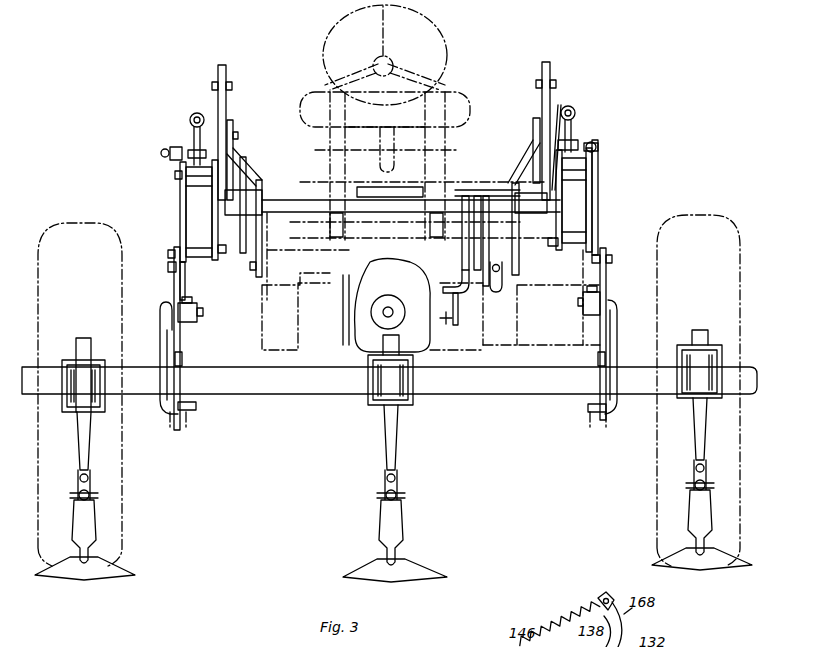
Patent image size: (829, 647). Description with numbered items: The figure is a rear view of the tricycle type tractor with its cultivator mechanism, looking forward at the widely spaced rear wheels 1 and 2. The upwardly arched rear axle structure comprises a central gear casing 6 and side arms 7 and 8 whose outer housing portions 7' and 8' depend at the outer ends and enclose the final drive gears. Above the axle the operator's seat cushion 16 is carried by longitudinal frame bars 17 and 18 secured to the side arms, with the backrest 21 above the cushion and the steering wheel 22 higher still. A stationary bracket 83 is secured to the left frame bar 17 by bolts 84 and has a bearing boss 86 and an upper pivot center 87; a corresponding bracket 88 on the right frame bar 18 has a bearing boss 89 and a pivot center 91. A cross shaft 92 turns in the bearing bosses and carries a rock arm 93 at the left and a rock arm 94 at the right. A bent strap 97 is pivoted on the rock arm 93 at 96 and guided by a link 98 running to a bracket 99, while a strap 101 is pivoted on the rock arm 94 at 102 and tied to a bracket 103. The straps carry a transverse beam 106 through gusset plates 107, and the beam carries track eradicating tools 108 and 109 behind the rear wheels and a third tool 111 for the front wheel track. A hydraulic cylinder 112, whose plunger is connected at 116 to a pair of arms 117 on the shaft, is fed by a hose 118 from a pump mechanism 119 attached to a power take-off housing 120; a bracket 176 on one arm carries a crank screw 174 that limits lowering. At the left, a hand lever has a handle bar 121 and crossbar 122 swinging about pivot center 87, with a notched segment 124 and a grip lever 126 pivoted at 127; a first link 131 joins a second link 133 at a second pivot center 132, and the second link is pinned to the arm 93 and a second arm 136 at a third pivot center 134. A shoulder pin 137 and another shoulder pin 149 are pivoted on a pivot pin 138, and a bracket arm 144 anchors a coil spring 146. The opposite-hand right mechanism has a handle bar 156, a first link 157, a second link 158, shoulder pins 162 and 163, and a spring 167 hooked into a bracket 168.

The rear wheel 1 is at (125, 515).
The rear wheel 2 is at (657, 515).
The central gear casing 6 is at (360, 275).
The side arm 7 is at (296, 317).
The outer housing portion 7' is at (199, 413).
The side arm 8 is at (515, 351).
The outer housing portion 8' is at (578, 413).
The seat cushion 16 is at (468, 192).
The longitudinal frame bar 17 is at (290, 273).
The longitudinal frame bar 18 is at (517, 284).
The backrest 21 is at (450, 98).
The steering wheel 22 is at (438, 40).
The stationary bracket 83 is at (248, 168).
The bolts 84 is at (256, 266).
The bearing boss 86 is at (240, 214).
The pivot center 87 is at (238, 136).
The stationary bracket 88 is at (536, 158).
The bearing boss 89 is at (540, 203).
The pivot center 91 is at (533, 130).
The cross shaft 92 is at (303, 204).
The rock arm 93 is at (180, 232).
The rock arm 94 is at (600, 224).
The pivot 96 is at (170, 266).
The bent strap 97 is at (173, 281).
The link 98 is at (160, 342).
The bracket 99 is at (197, 320).
The strap 101 is at (607, 288).
The pivot 102 is at (607, 260).
The bracket 103 is at (586, 314).
The transverse beam 106 is at (486, 382).
The gusset plates 107 is at (180, 359).
The track eradicating tool 108 is at (114, 572).
The track eradicating tool 109 is at (715, 560).
The track eradicating tool 111 is at (423, 566).
The hydraulic cylinder 112 is at (465, 280).
The pivotal connection 116 is at (462, 262).
The arms 117 is at (462, 246).
The hose 118 is at (458, 312).
The pump mechanism 119 is at (446, 318).
The power take-off housing 120 is at (355, 330).
The handle bar 121 is at (228, 80).
The crossbar 122 is at (236, 153).
The notched segment 124 is at (259, 185).
The grip lever 126 is at (217, 84).
The pivot 127 is at (234, 88).
The first link 131 is at (192, 196).
The second pivot center 132 is at (175, 176).
The second link 133 is at (180, 202).
The third pivot center 134 is at (174, 252).
The second arm 136 is at (226, 249).
The shoulder pin 137 is at (172, 150).
The pivot pin 138 is at (166, 157).
The bracket arm 144 is at (193, 125).
The coil spring 146 is at (197, 113).
The shoulder pin 149 is at (188, 150).
The handle bar 156 is at (549, 68).
The first link 157 is at (556, 110).
The second link 158 is at (594, 190).
The shoulder pin 162 is at (598, 150).
The shoulder pin 163 is at (580, 140).
The spring 167 is at (576, 110).
The bracket 168 is at (578, 126).
The crank screw 174 is at (495, 287).
The bracket 176 is at (486, 266).